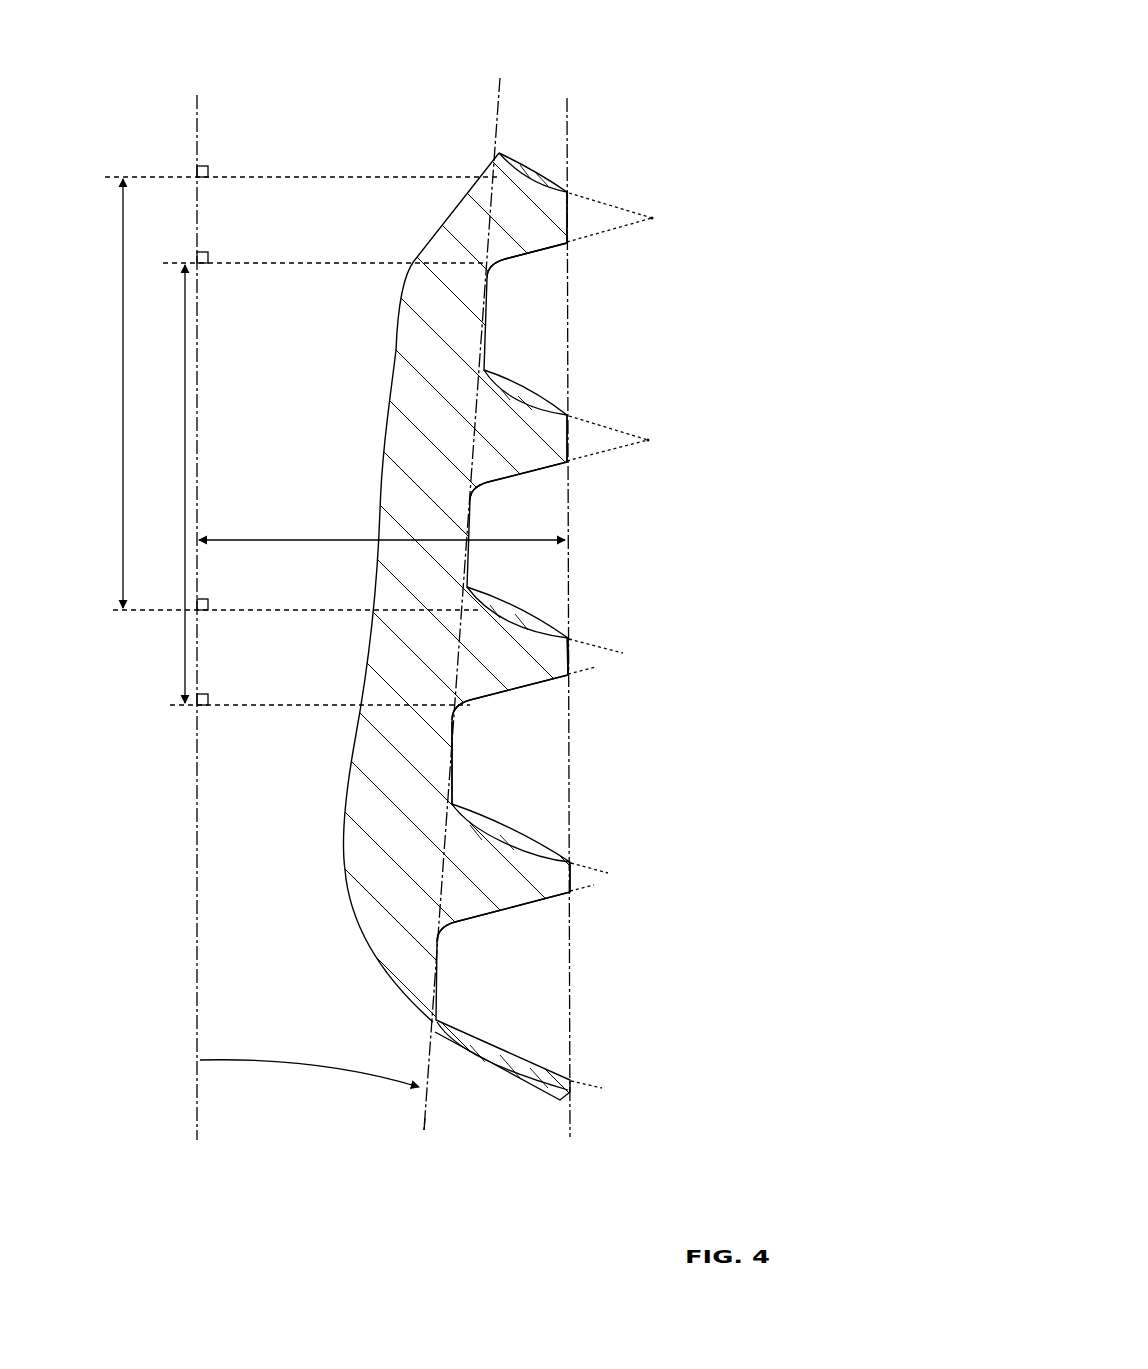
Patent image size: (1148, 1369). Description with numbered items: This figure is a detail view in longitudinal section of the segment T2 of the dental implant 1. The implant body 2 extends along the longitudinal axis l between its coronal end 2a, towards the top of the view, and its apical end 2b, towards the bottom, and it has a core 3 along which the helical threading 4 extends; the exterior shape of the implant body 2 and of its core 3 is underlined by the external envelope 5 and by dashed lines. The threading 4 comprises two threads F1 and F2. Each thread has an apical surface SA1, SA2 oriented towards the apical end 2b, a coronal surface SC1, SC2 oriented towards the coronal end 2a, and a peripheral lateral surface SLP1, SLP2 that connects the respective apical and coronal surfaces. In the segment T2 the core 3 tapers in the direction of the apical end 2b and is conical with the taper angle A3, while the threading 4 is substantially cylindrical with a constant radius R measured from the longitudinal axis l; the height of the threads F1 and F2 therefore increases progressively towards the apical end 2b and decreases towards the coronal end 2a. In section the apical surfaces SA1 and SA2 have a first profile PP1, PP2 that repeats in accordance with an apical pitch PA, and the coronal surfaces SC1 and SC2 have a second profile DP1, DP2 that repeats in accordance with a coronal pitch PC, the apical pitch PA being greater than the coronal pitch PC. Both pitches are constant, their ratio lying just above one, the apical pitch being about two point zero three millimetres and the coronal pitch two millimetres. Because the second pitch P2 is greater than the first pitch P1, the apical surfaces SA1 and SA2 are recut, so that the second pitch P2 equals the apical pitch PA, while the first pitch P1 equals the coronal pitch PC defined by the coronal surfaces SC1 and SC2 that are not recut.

The longitudinal axis l is at (193, 617).
The dental implant 1 is at (799, 350).
The implant body 2 is at (744, 533).
The coronal end 2a is at (581, 10).
The apical end 2b is at (611, 1215).
The core 3 is at (452, 783).
The helical threading 4 is at (682, 292).
The external envelope 5 is at (574, 770).
The segment T2 is at (830, 618).
The coronal surface SC1 is at (535, 172).
The coronal surface SC2 is at (533, 393).
The peripheral lateral surface SLP1 is at (570, 212).
The peripheral lateral surface SLP2 is at (570, 435).
The second profile DP1 is at (633, 212).
The second profile DP2 is at (633, 434).
The first profile PP1 is at (606, 232).
The first profile PP2 is at (610, 451).
The thread F1 is at (656, 213).
The thread F2 is at (652, 440).
The apical surface SA1 is at (541, 256).
The apical surface SA2 is at (540, 478).
The coronal pitch PC is at (287, 388).
The first pitch P1 is at (96, 421).
The apical pitch PA is at (313, 478).
The second pitch P2 is at (157, 504).
The radius R is at (382, 526).
The taper angle A3 is at (309, 1062).